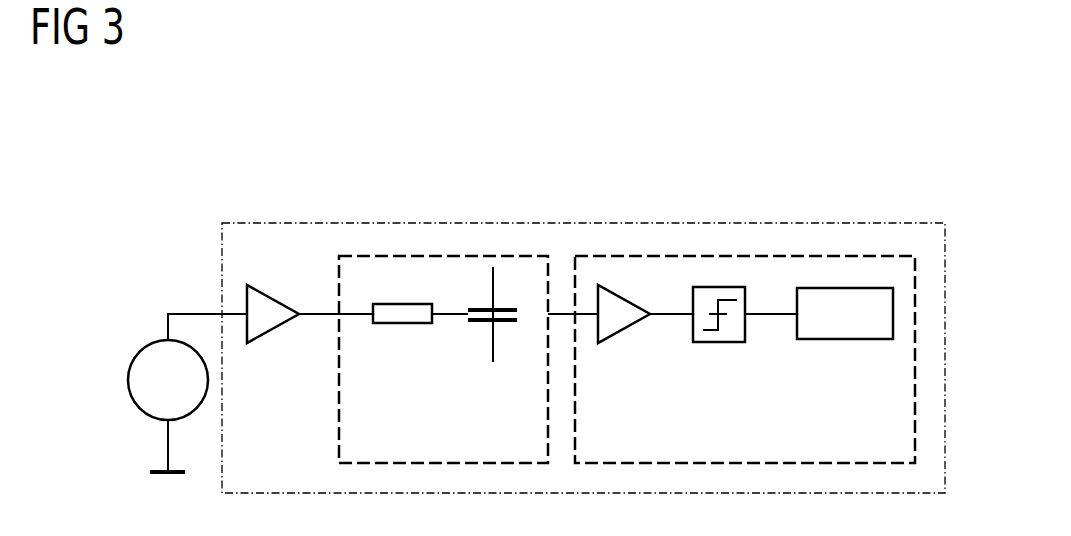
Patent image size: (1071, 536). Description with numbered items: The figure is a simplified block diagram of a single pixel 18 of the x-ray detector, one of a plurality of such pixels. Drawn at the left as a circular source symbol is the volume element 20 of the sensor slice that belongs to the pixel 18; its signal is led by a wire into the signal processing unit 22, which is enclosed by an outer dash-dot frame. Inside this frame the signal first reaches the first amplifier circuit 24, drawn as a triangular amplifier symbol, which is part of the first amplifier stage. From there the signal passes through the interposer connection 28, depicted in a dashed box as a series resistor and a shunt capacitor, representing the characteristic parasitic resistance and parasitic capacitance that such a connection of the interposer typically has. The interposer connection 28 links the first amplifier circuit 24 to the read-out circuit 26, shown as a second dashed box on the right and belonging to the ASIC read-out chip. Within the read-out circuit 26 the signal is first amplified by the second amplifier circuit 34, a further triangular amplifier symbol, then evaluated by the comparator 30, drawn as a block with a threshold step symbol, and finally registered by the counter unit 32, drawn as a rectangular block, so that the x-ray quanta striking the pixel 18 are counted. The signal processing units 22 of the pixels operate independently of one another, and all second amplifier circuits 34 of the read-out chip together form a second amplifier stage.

The pixel 18 is at (312, 153).
The volume element 20 is at (141, 348).
The signal processing unit 22 is at (477, 223).
The first amplifier circuit 24 is at (274, 295).
The read-out circuit 26 is at (660, 256).
The interposer connection 28 is at (398, 257).
The comparator 30 is at (715, 287).
The counter unit 32 is at (840, 288).
The second amplifier circuit 34 is at (626, 295).